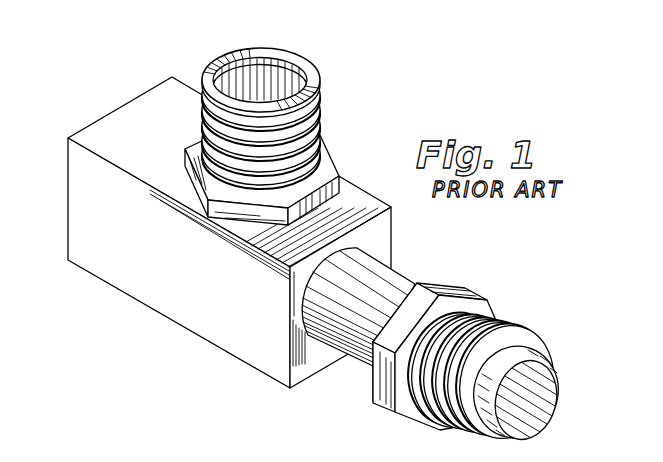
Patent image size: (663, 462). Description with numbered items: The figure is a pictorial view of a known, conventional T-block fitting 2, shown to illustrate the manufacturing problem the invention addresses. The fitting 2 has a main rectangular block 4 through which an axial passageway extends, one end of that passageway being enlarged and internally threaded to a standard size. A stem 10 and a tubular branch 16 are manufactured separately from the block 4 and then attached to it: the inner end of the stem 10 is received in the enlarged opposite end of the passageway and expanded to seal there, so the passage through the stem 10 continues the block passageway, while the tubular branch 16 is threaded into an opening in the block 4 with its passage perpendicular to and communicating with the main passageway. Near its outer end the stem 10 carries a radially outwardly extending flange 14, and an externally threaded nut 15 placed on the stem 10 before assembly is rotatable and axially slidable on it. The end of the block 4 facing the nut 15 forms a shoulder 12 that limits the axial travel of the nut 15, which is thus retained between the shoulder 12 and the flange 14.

The T-block fitting 2 is at (333, 224).
The main rectangular block 4 is at (229, 256).
The stem 10 is at (405, 272).
The shoulder 12 is at (303, 370).
The flange 14 is at (532, 342).
The externally threaded nut 15 is at (485, 308).
The tubular branch 16 is at (233, 50).